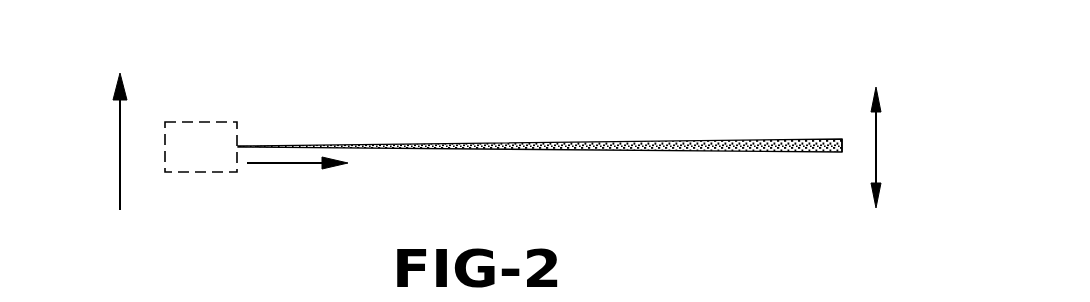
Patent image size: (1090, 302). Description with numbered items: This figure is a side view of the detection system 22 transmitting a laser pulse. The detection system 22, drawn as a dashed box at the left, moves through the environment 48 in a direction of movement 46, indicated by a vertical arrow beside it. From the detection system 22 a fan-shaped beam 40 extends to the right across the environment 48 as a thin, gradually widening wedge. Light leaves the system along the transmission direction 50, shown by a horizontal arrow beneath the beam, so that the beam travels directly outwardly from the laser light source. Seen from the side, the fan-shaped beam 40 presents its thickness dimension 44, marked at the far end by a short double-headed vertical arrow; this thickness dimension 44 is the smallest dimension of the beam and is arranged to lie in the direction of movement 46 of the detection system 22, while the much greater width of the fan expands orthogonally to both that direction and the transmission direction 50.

The detection system 22 is at (212, 123).
The environment 48 is at (502, 84).
The fan-shaped beam 40 is at (720, 141).
The direction of movement 46 is at (118, 156).
The transmission direction 50 is at (284, 163).
The thickness dimension 44 is at (878, 146).